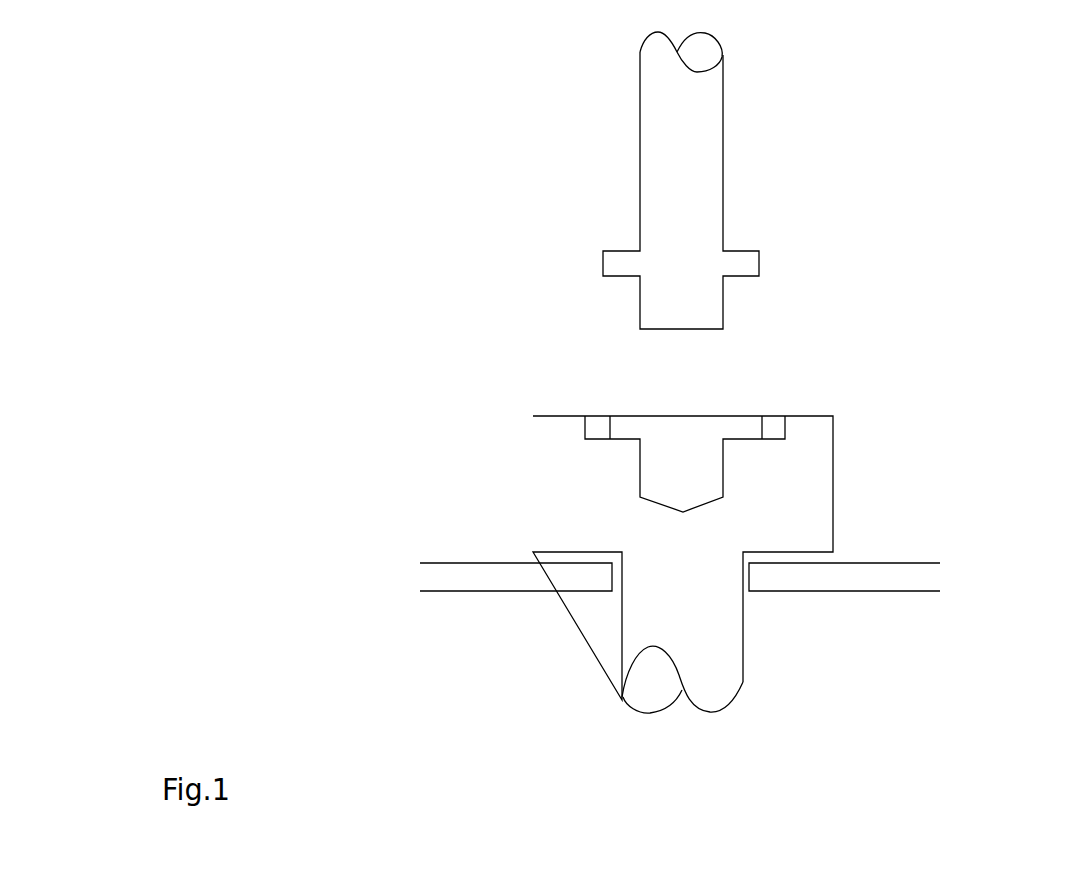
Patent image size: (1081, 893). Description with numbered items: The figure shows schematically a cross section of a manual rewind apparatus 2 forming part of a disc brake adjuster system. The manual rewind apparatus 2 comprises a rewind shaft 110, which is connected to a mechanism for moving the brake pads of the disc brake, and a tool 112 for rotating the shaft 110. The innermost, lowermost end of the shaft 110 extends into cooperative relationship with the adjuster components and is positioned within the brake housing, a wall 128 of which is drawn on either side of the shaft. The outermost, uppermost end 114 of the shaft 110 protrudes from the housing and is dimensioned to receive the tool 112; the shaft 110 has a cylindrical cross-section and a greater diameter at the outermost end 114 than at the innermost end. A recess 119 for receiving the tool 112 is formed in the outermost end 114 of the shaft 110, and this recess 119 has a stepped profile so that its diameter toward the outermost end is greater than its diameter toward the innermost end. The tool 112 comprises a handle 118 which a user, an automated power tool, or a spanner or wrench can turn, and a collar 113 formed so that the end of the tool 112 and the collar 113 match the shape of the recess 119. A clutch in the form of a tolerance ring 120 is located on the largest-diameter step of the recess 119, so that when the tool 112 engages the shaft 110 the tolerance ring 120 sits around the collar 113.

The manual rewind apparatus 2 is at (950, 180).
The rewind shaft 110 is at (713, 622).
The tool 112 is at (749, 213).
The collar 113 is at (617, 267).
The outermost end 114 is at (800, 418).
The handle 118 is at (650, 117).
The recess 119 is at (693, 449).
The tolerance ring 120 is at (597, 427).
The wall 128 is at (882, 569).